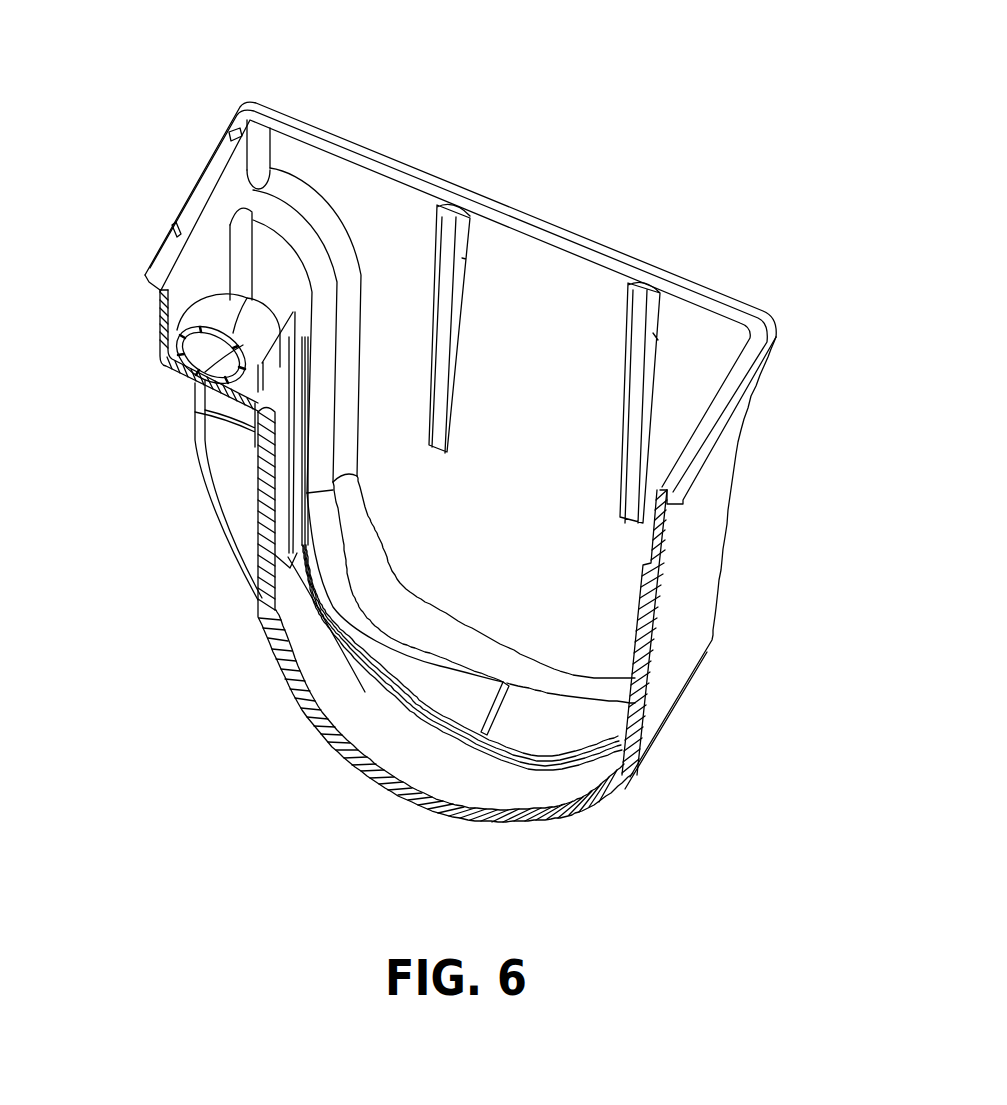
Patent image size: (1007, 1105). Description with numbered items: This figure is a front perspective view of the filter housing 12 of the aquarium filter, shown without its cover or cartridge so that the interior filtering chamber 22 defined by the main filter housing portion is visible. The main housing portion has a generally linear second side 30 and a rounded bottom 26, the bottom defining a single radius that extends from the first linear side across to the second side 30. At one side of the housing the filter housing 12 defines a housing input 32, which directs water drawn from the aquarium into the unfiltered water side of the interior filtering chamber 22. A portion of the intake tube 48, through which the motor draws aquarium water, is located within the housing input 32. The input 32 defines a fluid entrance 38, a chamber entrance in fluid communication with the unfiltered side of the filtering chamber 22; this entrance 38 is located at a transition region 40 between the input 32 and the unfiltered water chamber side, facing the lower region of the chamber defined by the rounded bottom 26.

The filter housing 12 is at (678, 183).
The interior filtering chamber 22 is at (553, 503).
The bottom 26 is at (412, 790).
The second side 30 is at (707, 583).
The housing input 32 is at (200, 456).
The fluid entrance 38 is at (320, 570).
The transition region 40 is at (333, 617).
The intake tube 48 is at (205, 318).